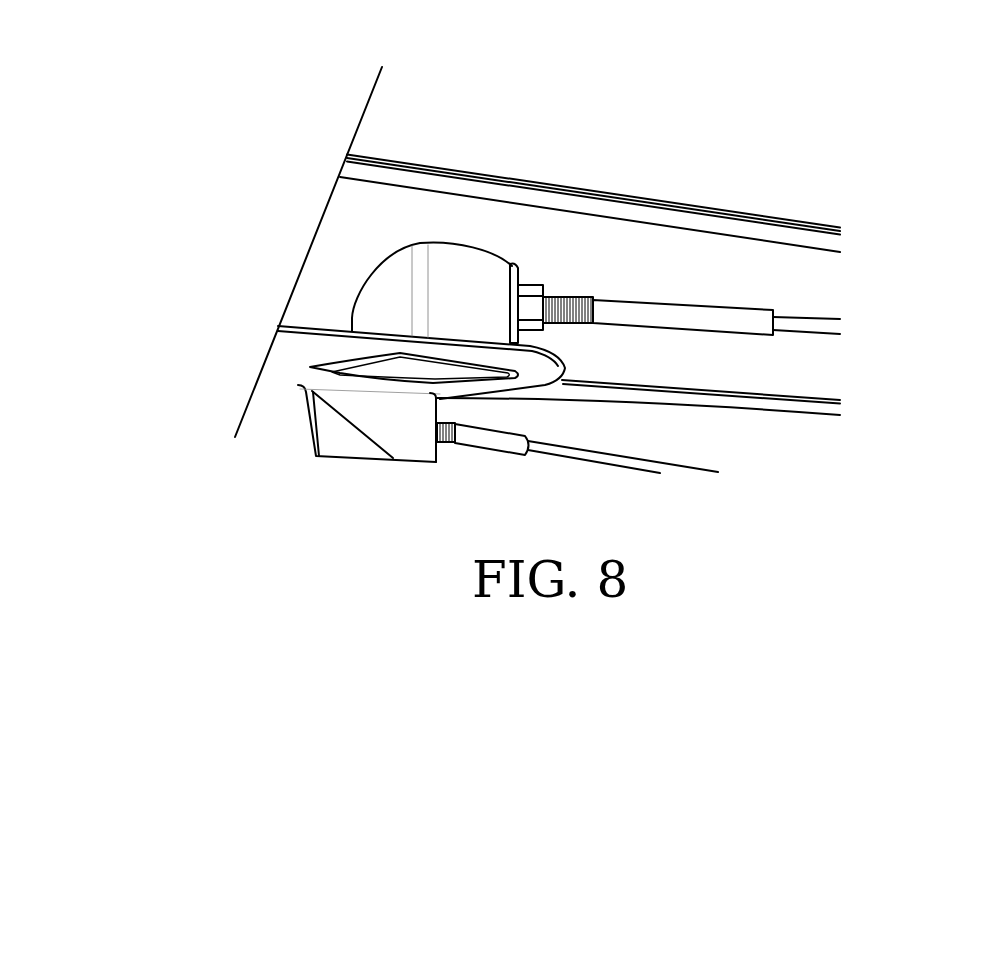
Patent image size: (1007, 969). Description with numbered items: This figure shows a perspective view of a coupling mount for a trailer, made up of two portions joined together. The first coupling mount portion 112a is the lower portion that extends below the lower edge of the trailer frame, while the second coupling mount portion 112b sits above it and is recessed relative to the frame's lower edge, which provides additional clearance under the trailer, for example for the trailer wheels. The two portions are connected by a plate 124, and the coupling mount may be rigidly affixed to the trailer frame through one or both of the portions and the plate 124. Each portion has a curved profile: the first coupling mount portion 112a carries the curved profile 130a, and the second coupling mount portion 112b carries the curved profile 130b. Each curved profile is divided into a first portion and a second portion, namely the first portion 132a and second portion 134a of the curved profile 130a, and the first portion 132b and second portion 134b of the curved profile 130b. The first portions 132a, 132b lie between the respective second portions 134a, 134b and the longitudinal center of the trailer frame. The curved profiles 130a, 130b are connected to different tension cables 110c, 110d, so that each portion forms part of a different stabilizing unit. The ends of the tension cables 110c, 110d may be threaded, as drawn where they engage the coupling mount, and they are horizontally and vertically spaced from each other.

The tension cable 110c is at (610, 462).
The tension cable 110d is at (812, 327).
The first coupling mount portion 112a is at (407, 453).
The second coupling mount portion 112b is at (458, 272).
The plate 124 is at (290, 358).
The curved profile 130a is at (333, 397).
The curved profile 130b is at (442, 300).
The first portion 132a is at (427, 445).
The first portion 132b is at (492, 272).
The second portion 134a is at (363, 417).
The second portion 134b is at (441, 258).